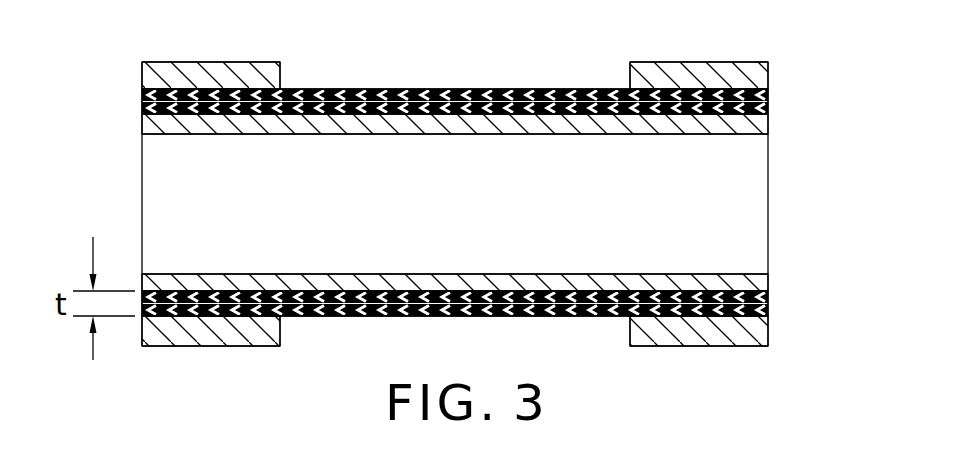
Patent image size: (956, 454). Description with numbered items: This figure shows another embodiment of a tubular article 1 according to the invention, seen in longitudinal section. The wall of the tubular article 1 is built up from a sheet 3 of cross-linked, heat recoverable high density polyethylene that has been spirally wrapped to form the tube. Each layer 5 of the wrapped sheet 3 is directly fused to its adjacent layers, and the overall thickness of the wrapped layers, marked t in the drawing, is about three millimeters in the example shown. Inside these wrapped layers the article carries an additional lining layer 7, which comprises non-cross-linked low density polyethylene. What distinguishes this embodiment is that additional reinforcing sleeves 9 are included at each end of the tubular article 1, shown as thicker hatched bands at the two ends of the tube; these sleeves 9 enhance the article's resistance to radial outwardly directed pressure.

The tubular article 1 is at (430, 78).
The sheet 3 is at (146, 101).
The layer 5 is at (766, 111).
The lining layer 7 is at (764, 122).
The reinforcing sleeve 9 is at (181, 62).